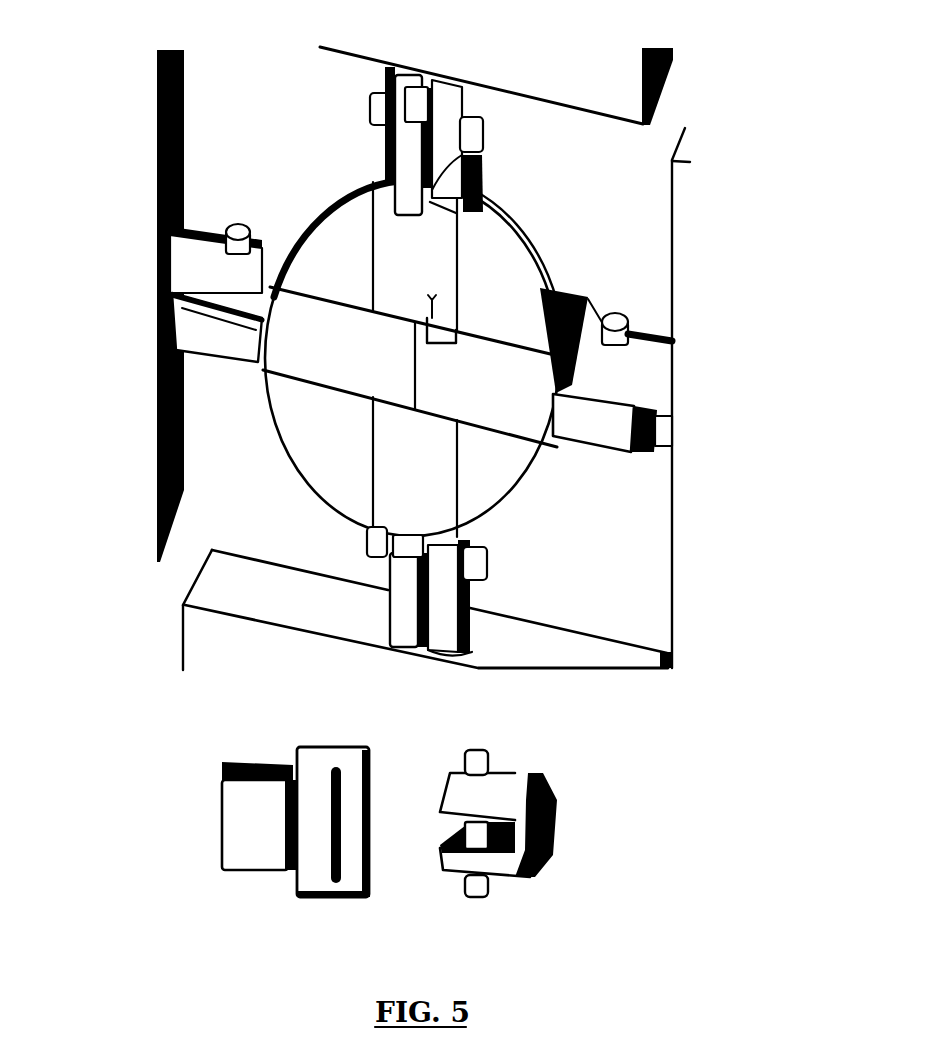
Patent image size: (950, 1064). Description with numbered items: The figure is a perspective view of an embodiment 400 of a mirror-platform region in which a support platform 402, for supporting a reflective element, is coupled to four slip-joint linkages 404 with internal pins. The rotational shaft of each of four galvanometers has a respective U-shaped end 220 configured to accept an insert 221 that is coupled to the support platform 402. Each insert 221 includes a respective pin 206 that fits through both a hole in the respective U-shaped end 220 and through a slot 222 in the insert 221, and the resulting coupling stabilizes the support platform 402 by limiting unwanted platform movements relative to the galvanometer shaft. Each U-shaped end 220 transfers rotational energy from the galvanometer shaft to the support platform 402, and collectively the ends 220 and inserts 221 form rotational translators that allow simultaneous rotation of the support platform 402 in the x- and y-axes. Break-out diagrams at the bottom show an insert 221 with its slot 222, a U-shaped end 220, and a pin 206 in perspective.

The embodiment 400 is at (773, 325).
The support platform 402 is at (517, 498).
The U-shaped end 220 is at (447, 100).
The insert 221 is at (404, 148).
The slot 222 is at (333, 882).
The pin 206 is at (470, 890).
The linkage 404 is at (496, 108).